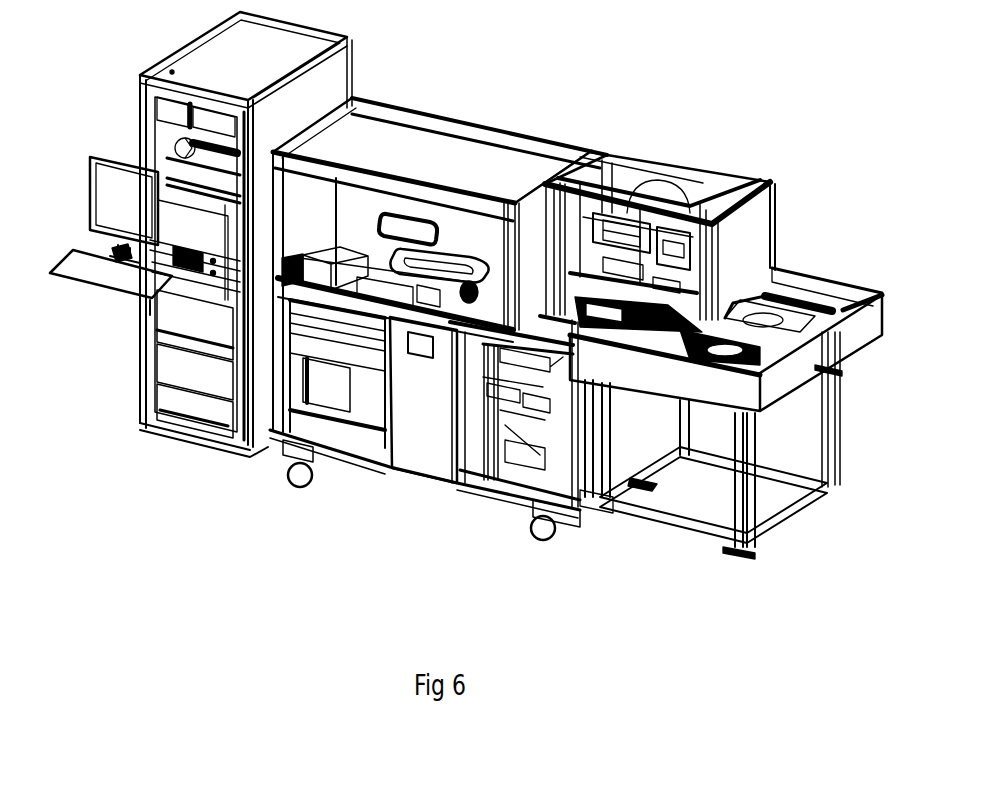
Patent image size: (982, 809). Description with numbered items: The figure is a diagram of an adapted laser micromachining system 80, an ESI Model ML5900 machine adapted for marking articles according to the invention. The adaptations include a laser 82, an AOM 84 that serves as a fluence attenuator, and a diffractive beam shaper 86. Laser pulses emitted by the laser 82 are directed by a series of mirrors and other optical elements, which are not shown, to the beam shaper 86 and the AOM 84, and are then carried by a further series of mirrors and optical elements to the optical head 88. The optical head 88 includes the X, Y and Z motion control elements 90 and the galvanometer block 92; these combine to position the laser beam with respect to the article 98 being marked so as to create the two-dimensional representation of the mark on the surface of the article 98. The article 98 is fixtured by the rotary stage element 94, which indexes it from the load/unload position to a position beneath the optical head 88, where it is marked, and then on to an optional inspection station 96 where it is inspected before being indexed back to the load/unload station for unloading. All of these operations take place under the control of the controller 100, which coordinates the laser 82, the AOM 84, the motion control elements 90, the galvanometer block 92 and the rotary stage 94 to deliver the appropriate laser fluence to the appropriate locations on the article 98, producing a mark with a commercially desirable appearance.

The laser micromachining system 80 is at (180, 48).
The laser 82 is at (340, 265).
The AOM fluence attenuator 84 is at (420, 227).
The diffractive beam shaper 86 is at (437, 257).
The optical head 88 is at (627, 150).
The X, Y and Z motion control elements 90 is at (647, 217).
The galvanometer block 92 is at (677, 237).
The rotary stage element 94 is at (793, 270).
The inspection station 96 is at (807, 300).
The article 98 is at (660, 353).
The controller 100 is at (200, 283).